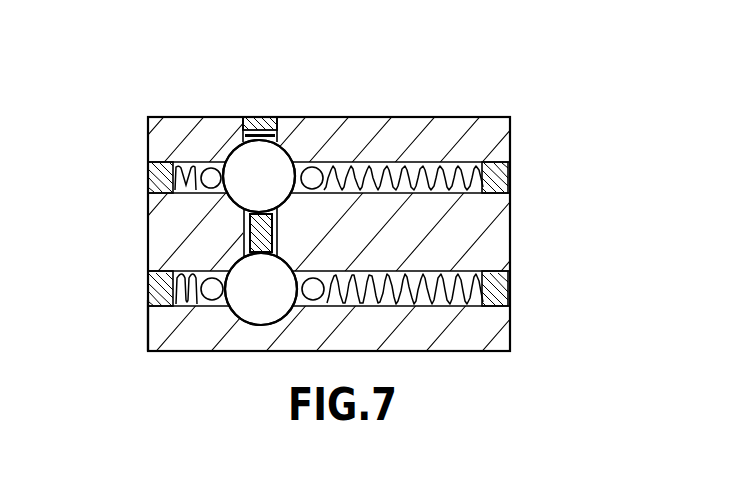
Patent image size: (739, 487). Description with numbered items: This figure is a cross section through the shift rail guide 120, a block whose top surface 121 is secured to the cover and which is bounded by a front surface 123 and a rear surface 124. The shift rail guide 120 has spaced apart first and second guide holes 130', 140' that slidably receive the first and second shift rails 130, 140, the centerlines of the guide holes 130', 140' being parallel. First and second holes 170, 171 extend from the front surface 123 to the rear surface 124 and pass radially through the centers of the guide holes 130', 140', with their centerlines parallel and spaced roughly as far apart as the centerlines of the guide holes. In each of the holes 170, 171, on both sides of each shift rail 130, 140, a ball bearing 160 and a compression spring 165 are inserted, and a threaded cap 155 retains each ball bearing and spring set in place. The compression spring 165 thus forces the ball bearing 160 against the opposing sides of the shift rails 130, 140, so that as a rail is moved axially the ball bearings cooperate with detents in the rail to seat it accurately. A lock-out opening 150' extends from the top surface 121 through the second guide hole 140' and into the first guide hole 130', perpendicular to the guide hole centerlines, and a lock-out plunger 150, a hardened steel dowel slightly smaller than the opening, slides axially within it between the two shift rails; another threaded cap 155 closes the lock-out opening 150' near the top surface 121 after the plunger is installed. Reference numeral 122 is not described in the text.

The shift rail guide 120 is at (518, 134).
The top surface 121 is at (476, 117).
The lower body plate 122 is at (417, 353).
The front surface 123 is at (509, 237).
The rear surface 124 is at (148, 339).
The first shift rail 130 is at (162, 283).
The first guide hole 130' is at (261, 289).
The second shift rail 140 is at (234, 129).
The second guide hole 140' is at (259, 176).
The lock-out plunger 150 is at (170, 229).
The lock-out opening 150' is at (298, 71).
The threaded cap 155 is at (270, 116).
The ball bearing 160 is at (209, 176).
The compression spring 165 is at (197, 172).
The first hole 170 is at (518, 277).
The second hole 171 is at (518, 166).